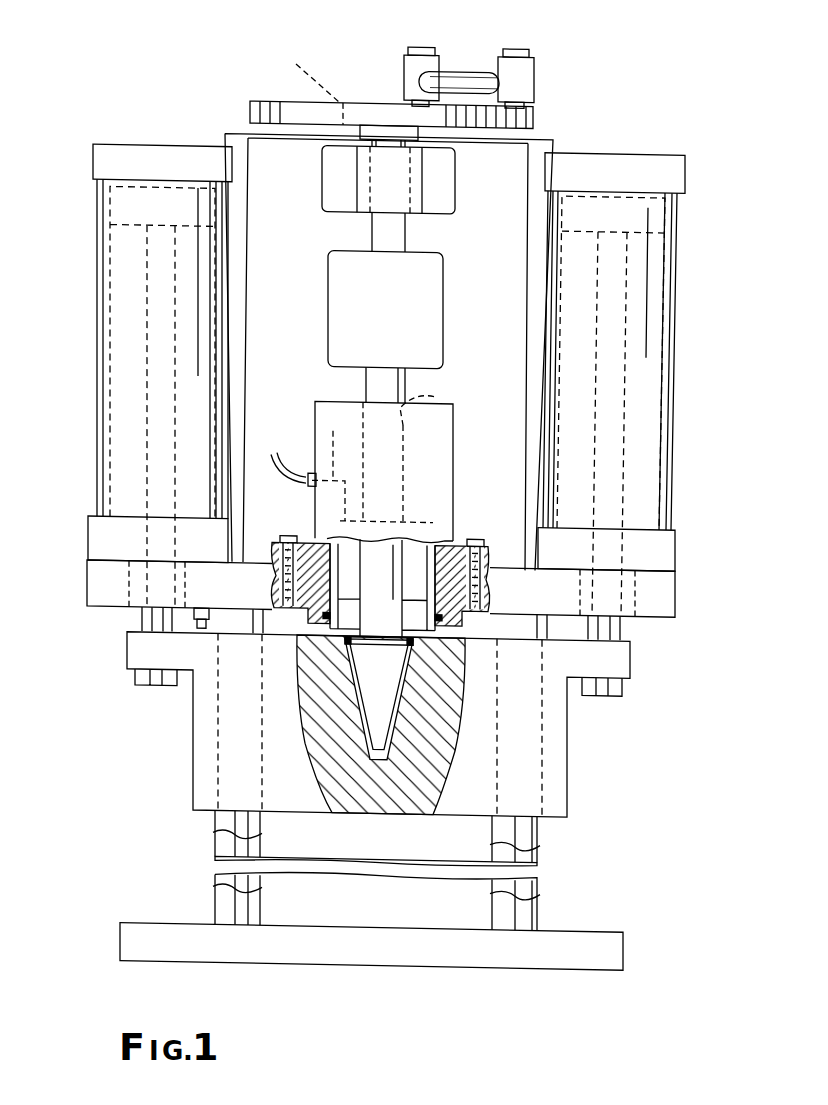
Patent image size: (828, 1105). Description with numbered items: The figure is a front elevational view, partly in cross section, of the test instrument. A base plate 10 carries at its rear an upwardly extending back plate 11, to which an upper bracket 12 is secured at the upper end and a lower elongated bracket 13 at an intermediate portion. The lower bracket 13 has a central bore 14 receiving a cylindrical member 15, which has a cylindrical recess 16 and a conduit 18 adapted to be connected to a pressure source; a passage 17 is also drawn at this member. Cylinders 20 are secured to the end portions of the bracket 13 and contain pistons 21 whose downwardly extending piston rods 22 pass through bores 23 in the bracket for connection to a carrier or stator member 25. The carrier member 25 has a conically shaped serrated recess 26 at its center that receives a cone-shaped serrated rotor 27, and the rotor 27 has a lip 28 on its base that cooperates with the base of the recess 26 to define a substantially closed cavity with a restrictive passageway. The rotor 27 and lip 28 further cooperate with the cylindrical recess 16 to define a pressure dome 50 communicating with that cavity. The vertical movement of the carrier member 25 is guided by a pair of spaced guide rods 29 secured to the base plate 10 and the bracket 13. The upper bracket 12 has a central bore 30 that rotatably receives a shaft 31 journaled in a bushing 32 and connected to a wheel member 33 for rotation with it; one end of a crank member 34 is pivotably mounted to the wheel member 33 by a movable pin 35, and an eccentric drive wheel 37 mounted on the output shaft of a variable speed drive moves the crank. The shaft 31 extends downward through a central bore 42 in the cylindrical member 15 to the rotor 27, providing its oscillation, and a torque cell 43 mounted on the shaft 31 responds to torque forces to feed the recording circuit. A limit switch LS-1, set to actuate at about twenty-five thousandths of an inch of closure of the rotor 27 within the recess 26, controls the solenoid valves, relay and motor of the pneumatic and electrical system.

The base plate 10 is at (598, 943).
The back plate 11 is at (548, 144).
The upper bracket 12 is at (444, 163).
The lower elongated bracket 13 is at (665, 611).
The bore 14 is at (473, 597).
The cylindrical member 15 is at (447, 486).
The cylindrical recess 16 is at (330, 541).
The fluid passage 17 is at (333, 436).
The conduit 18 is at (308, 484).
The cylinders 20 is at (110, 155).
The pistons 21 is at (125, 235).
The piston rods 22 is at (146, 625).
The bores 23 is at (128, 600).
The carrier member 25 is at (205, 801).
The conically shaped serrated recess 26 is at (365, 706).
The cone-shaped serrated rotor 27 is at (380, 697).
The lip 28 is at (350, 646).
The guide rods 29 is at (530, 832).
The central bore 30 is at (399, 207).
The shaft 31 is at (372, 238).
The bushing 32 is at (388, 126).
The wheel member 33 is at (297, 105).
The crank member 34 is at (462, 76).
The movable pin 35 is at (532, 56).
The eccentric drive wheel 37 is at (296, 79).
The central bore 42 is at (440, 398).
The torque cell 43 is at (443, 317).
The pressure dome 50 is at (415, 548).
The limit switch LS-1 is at (201, 612).